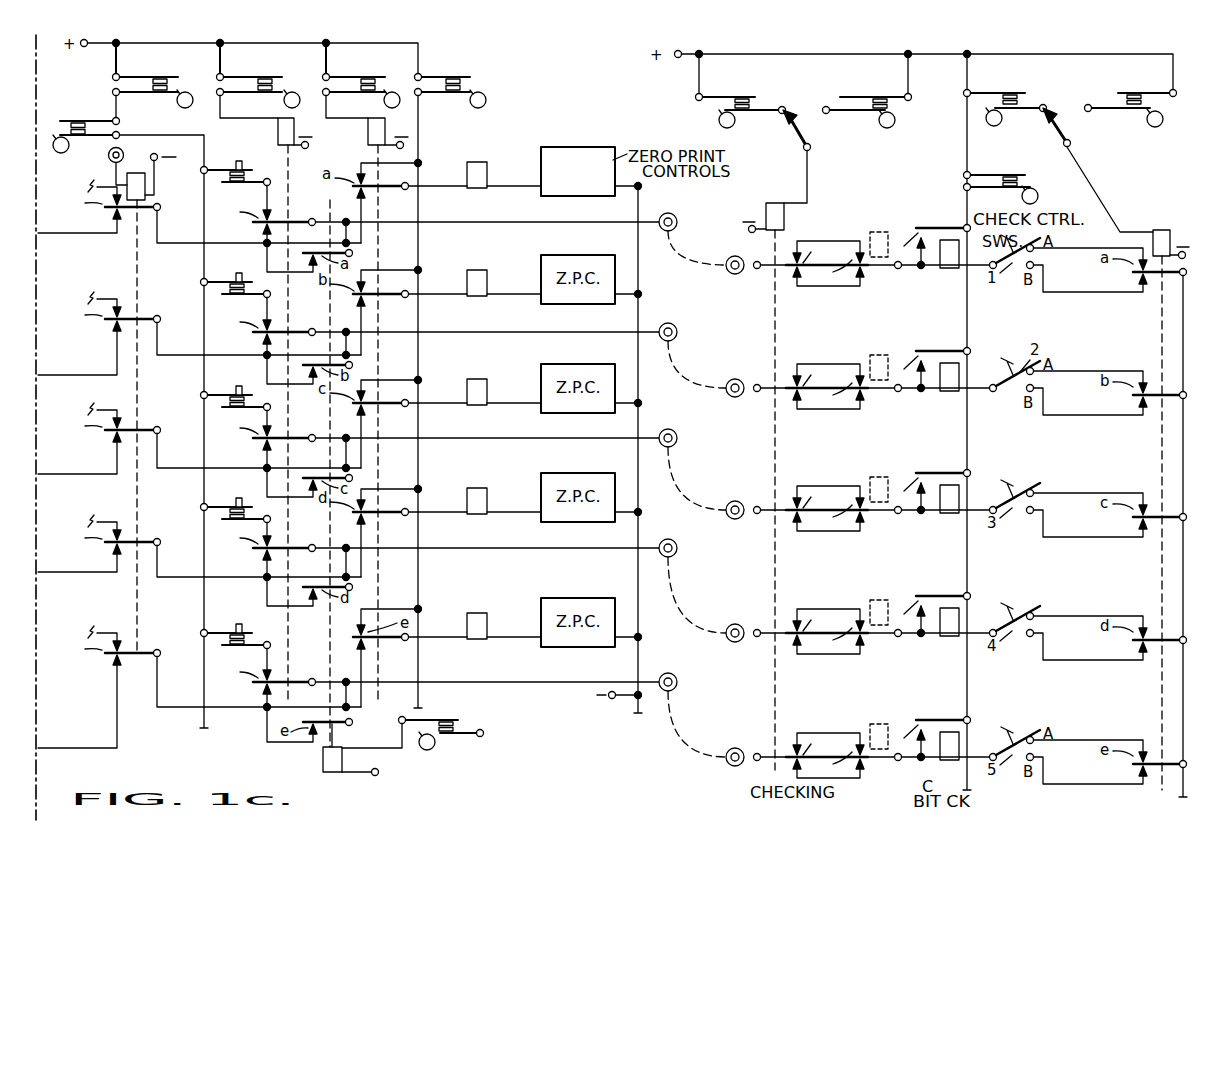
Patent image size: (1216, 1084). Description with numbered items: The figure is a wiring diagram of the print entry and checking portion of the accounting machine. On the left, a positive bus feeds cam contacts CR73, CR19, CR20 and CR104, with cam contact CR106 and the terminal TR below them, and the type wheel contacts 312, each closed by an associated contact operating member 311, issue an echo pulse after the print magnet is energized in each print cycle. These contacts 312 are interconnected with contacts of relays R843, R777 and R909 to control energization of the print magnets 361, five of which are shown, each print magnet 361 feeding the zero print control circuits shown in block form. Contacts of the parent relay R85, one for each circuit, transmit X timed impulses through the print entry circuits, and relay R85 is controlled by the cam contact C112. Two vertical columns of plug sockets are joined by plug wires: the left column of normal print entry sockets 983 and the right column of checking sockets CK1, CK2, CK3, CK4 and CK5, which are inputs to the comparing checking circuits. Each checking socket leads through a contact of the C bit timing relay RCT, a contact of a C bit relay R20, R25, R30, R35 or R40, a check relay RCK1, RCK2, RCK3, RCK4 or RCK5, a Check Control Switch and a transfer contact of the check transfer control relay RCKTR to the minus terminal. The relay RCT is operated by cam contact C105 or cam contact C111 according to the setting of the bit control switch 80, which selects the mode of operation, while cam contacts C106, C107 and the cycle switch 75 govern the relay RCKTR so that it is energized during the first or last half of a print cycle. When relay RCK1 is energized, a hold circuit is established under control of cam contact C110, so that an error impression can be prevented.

The print entry sockets 983 is at (670, 213).
The print magnet 361 is at (465, 168).
The contact operating member 311 is at (242, 170).
The type wheel contact 312 is at (199, 464).
The bit control switch 80 is at (803, 115).
The cycle switch 75 is at (1066, 116).
The cam contact CR73 is at (187, 69).
The cam contact CR19 is at (291, 69).
The cam contact CR20 is at (394, 69).
The cam contact CR104 is at (470, 78).
The cam contact CR106 is at (97, 109).
The TR terminal TR is at (108, 150).
The relay R843 is at (127, 187).
The relay R777 is at (278, 130).
The relay R909 is at (386, 128).
The parent relay R85 is at (323, 760).
The cam contact C112 is at (460, 726).
The cam contact C105 is at (764, 88).
The cam contact C111 is at (848, 101).
The cam contact C106 is at (1032, 87).
The cam contact C107 is at (1118, 100).
The cam contact C110 is at (1024, 185).
The C bit timing relay RCT is at (784, 225).
The check transfer control relay RCKTR is at (1152, 233).
The C bit relay R20 is at (870, 241).
The C bit relay R25 is at (870, 364).
The C bit relay R30 is at (870, 486).
The C bit relay R35 is at (870, 609).
The C bit relay R40 is at (870, 733).
The check relay RCK1 is at (951, 267).
The check relay RCK2 is at (951, 390).
The check relay RCK3 is at (951, 512).
The check relay RCK4 is at (951, 635).
The check relay RCK5 is at (951, 759).
The checking socket CK1 is at (731, 273).
The checking socket CK2 is at (731, 396).
The checking socket CK3 is at (731, 518).
The checking socket CK4 is at (731, 641).
The checking socket CK5 is at (731, 765).